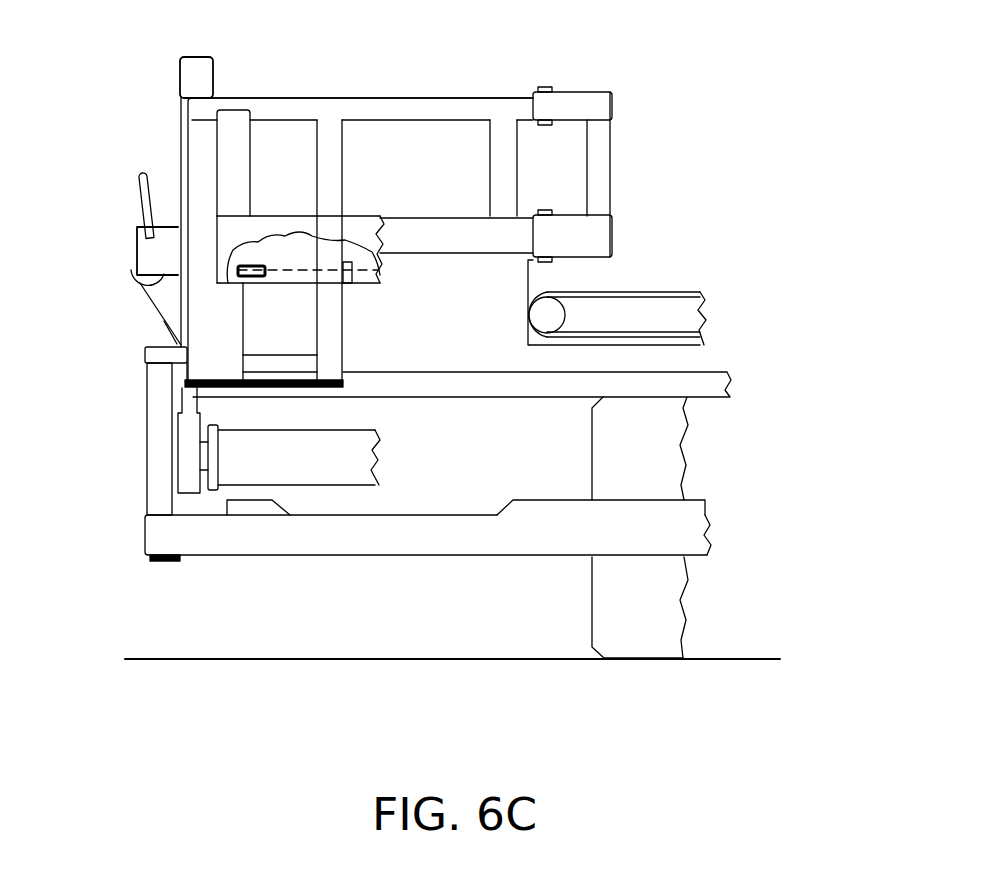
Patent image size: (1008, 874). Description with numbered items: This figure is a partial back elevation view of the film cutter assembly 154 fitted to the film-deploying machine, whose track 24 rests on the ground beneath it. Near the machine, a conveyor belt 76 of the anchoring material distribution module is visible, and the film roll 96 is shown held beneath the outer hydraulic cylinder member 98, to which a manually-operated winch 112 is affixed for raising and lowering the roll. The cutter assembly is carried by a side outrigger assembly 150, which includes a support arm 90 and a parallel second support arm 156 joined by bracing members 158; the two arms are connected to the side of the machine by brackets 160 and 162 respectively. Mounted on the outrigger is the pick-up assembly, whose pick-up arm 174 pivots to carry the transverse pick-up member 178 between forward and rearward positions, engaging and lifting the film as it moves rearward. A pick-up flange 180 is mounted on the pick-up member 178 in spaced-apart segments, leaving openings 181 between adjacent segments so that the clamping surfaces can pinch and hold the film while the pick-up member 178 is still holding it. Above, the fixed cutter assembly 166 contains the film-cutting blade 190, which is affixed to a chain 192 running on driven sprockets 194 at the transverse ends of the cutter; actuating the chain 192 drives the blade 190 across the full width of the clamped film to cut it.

The track 24 is at (650, 636).
The conveyor belt 76 is at (668, 290).
The support arm 90 is at (467, 236).
The film roll 96 is at (345, 440).
The outer hydraulic cylinder member 98 is at (198, 78).
The manually-operated winch 112 is at (130, 269).
The outrigger assembly 150 is at (636, 155).
The film cutter assembly 154 is at (205, 148).
The second support arm 156 is at (405, 104).
The bracing member 158 is at (317, 165).
The bracket 160 is at (578, 237).
The bracket 162 is at (563, 107).
The fixed cutter assembly 166 is at (285, 222).
The pick-up arm 174 is at (155, 466).
The pick-up member 178 is at (340, 537).
The pick-up flange 180 is at (250, 508).
The opening 181 is at (408, 501).
The film-cutting blade 190 is at (353, 281).
The chain 192 is at (322, 270).
The driven sprocket 194 is at (263, 277).